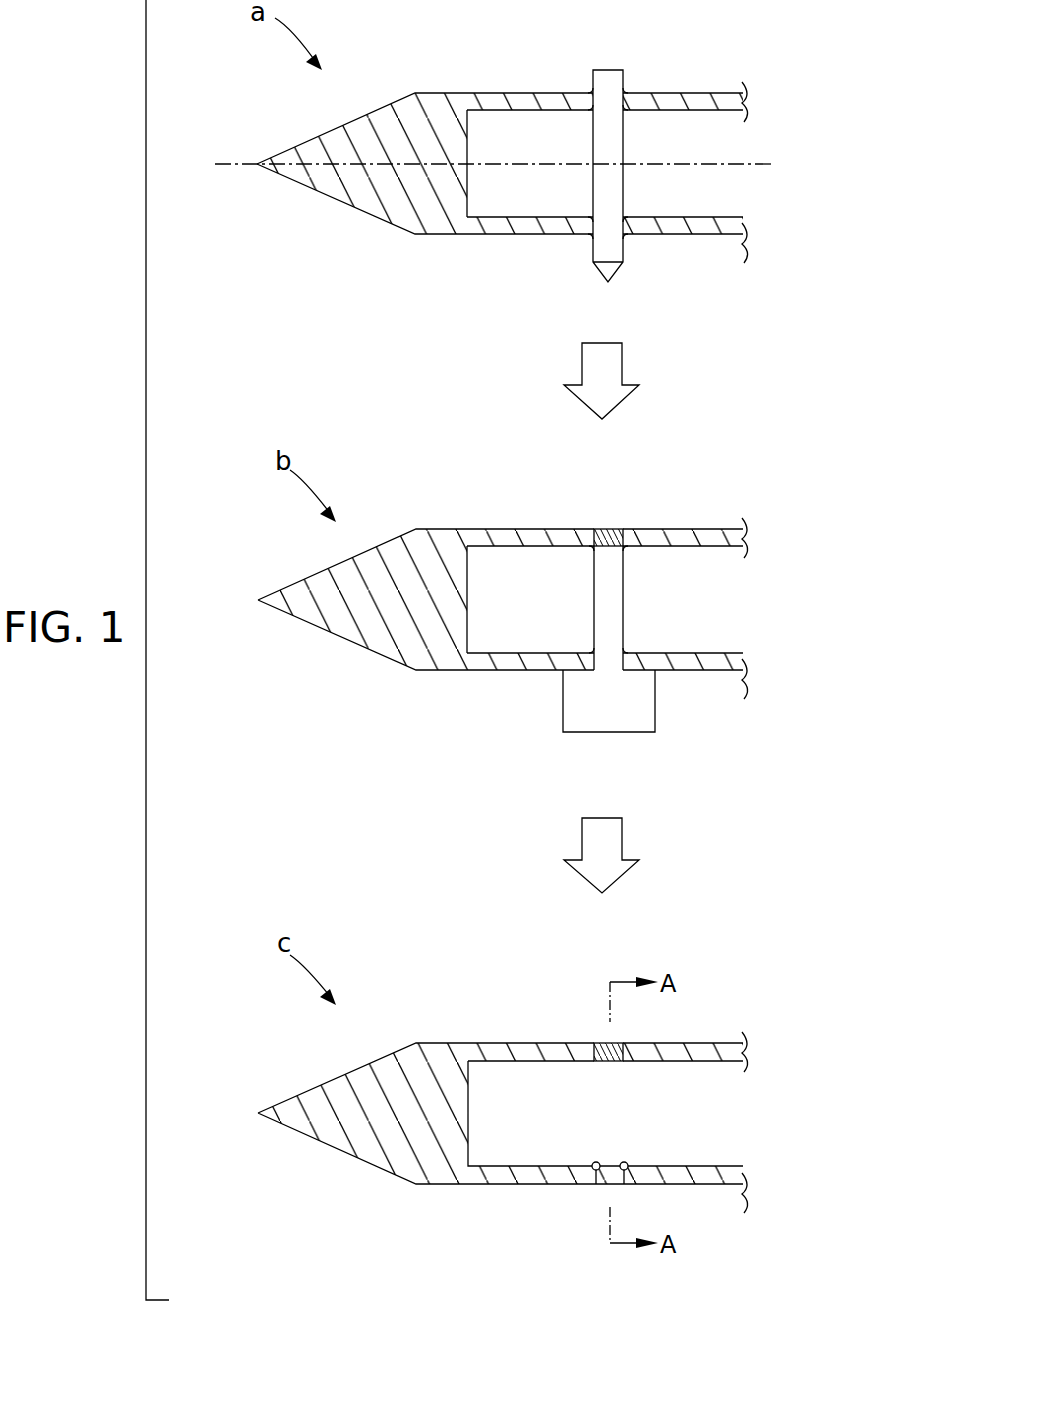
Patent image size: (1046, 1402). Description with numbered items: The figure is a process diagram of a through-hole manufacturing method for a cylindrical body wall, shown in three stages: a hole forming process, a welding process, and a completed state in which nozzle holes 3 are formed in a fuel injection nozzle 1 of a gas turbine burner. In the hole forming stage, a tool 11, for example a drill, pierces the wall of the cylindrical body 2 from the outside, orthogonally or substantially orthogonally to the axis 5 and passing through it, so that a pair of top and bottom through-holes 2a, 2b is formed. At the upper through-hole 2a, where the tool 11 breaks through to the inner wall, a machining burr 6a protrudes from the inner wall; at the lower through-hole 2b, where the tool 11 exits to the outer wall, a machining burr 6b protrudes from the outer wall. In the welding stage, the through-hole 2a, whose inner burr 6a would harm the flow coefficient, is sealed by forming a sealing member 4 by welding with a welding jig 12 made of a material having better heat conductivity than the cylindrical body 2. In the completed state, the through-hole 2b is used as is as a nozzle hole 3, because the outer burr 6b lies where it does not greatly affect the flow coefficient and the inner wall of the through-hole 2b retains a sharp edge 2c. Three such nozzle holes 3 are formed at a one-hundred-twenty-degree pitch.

The fuel injection nozzle 1 is at (726, 1001).
The cylindrical body 2 is at (713, 236).
The through-hole 2a is at (592, 92).
The through-hole 2b is at (624, 216).
The sharp edge 2c is at (624, 1161).
The nozzle hole 3 is at (604, 1181).
The sealing member 4 is at (610, 532).
The axis 5 is at (757, 164).
The machining burr (inner burr) 6a is at (588, 113).
The machining burr (outer burr) 6b is at (626, 238).
The tool 11 is at (607, 78).
The welding jig 12 is at (615, 583).